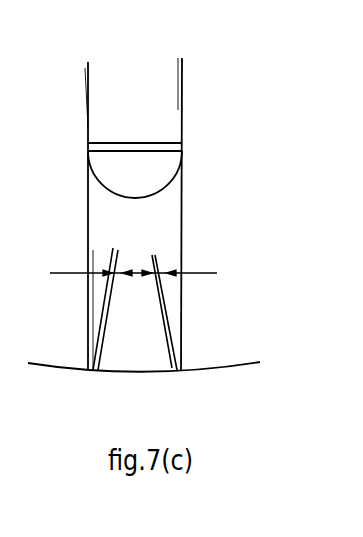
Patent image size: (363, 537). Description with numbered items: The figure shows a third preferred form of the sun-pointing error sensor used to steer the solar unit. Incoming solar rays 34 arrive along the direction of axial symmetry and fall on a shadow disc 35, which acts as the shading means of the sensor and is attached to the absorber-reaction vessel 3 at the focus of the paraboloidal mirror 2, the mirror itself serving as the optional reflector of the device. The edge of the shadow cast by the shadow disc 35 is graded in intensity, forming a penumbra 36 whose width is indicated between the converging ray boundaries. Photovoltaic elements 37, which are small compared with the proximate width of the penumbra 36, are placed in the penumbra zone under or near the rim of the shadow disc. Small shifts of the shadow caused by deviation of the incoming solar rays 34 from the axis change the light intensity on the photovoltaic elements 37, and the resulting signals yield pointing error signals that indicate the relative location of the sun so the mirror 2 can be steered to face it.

The paraboloidal mirror 2 is at (55, 370).
The absorber-reaction vessel 3 is at (208, 214).
The incoming solar rays 34 is at (88, 82).
The shadow disc 35 is at (148, 148).
The penumbra 36 is at (129, 309).
The photovoltaic elements 37 is at (91, 178).